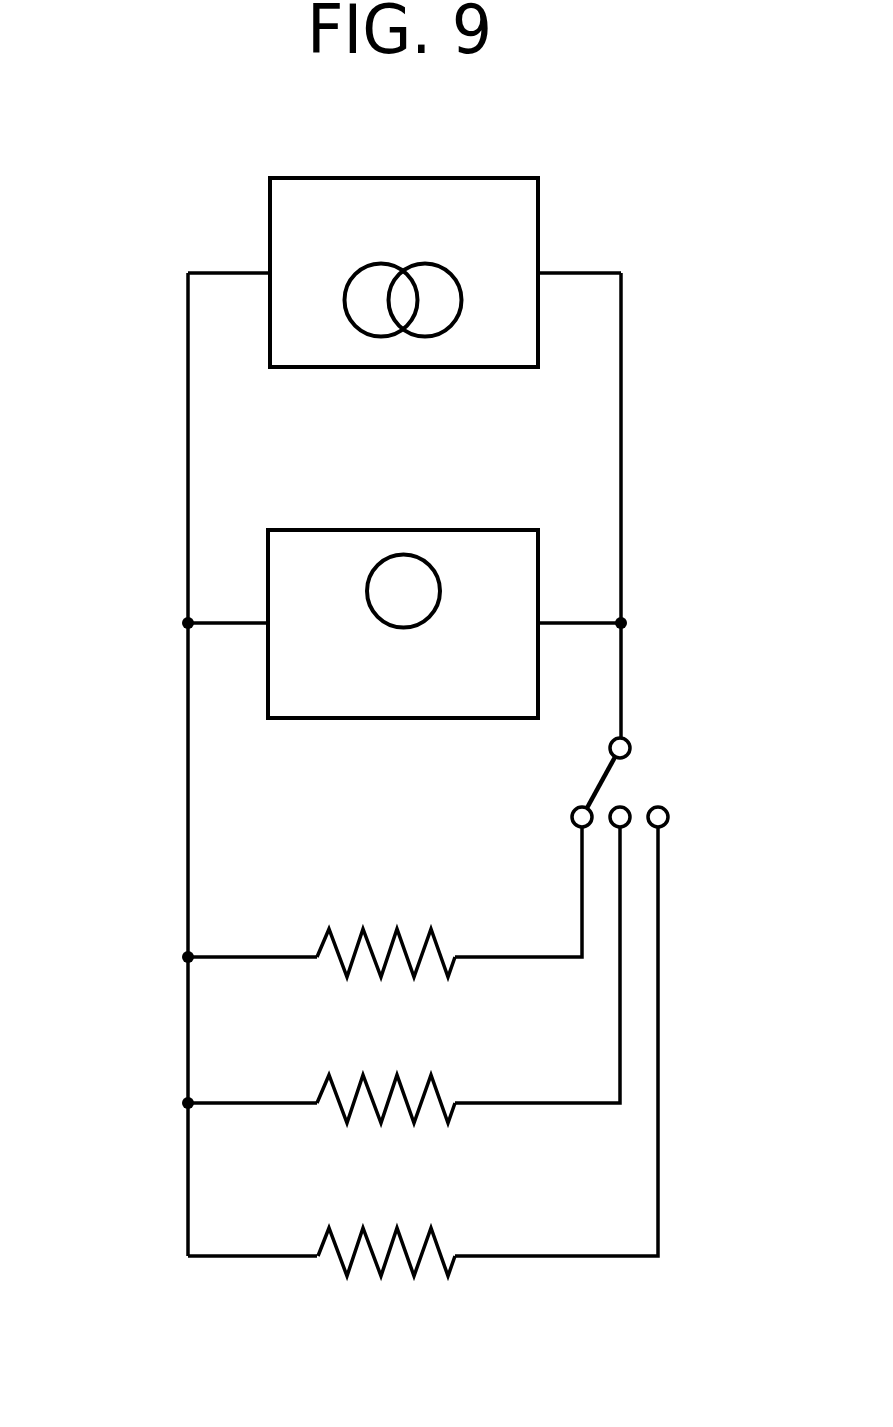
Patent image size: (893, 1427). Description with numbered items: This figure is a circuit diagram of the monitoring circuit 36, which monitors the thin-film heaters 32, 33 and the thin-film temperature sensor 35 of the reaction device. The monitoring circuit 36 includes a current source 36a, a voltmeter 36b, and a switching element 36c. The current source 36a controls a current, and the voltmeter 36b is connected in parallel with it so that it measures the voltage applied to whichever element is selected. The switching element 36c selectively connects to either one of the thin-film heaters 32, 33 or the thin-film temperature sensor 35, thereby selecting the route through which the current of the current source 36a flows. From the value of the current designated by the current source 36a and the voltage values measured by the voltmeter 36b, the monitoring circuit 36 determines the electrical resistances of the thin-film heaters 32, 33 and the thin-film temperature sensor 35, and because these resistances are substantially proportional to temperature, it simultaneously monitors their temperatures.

The monitoring circuit 36 is at (152, 233).
The current source 36a is at (538, 236).
The voltmeter 36b is at (488, 530).
The switching element 36c is at (606, 773).
The thin-film temperature sensor 35 is at (402, 938).
The thin-film heater 33 is at (402, 1084).
The thin-film heater 32 is at (402, 1238).